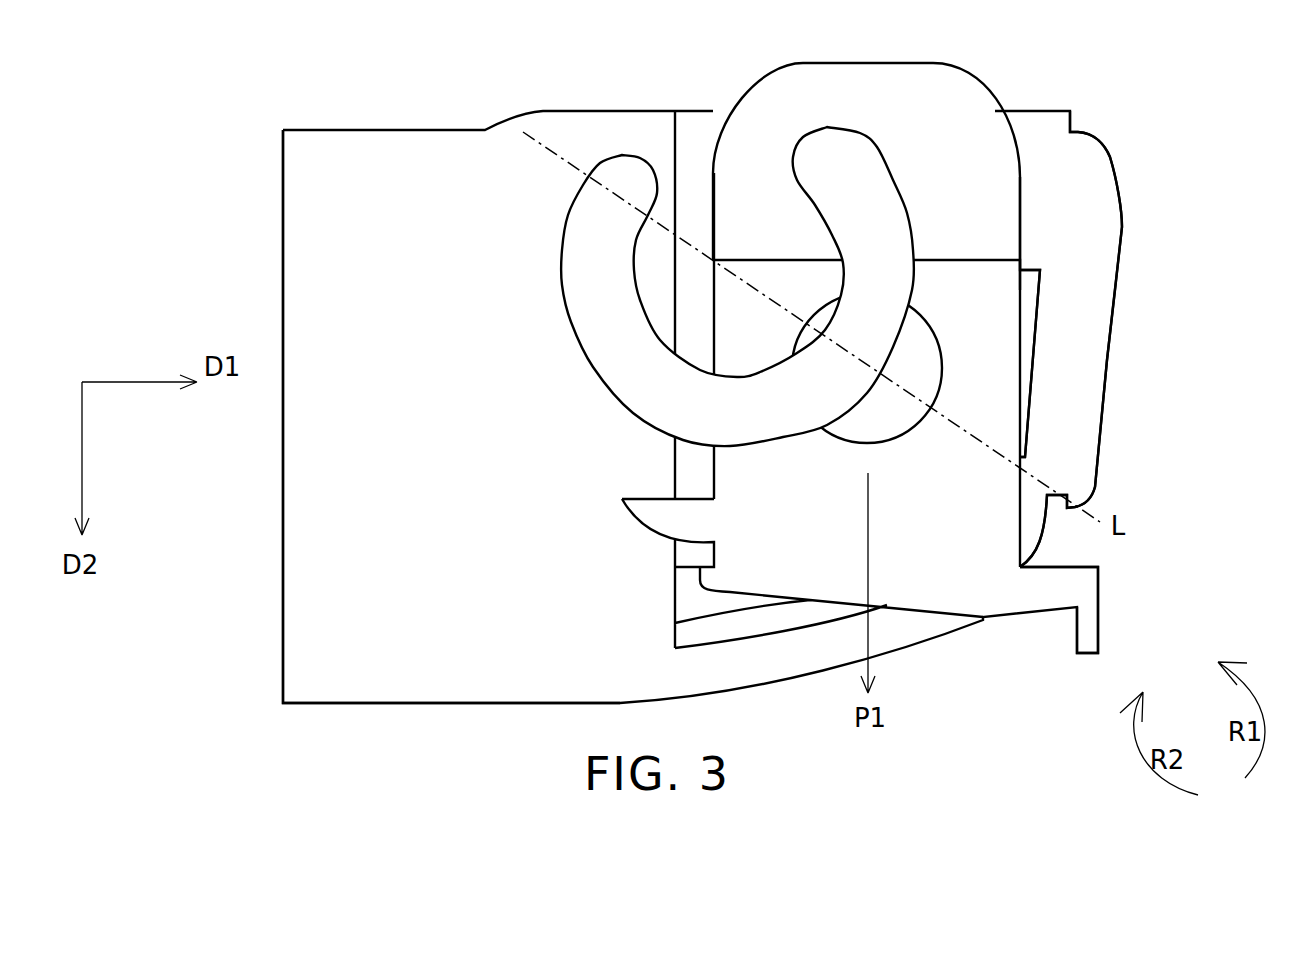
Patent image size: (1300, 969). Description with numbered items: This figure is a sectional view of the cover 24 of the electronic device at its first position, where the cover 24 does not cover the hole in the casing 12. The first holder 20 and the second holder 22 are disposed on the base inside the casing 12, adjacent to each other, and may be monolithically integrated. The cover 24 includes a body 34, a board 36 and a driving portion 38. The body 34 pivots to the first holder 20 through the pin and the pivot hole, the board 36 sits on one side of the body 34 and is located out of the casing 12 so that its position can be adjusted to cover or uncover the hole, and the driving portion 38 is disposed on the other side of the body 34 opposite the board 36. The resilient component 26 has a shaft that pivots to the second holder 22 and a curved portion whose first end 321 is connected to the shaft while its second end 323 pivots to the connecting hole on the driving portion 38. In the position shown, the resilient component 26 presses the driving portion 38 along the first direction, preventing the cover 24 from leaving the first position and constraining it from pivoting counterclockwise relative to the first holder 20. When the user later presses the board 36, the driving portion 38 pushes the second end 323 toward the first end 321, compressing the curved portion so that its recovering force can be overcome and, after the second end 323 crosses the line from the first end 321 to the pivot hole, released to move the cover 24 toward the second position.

The casing 12 is at (1043, 125).
The first holder 20 is at (703, 130).
The second holder 22 is at (448, 140).
The cover 24 is at (1141, 382).
The resilient component 26 is at (574, 364).
The first end 321 is at (620, 158).
The second end 323 is at (848, 143).
The body 34 is at (998, 330).
The board 36 is at (1117, 605).
The driving portion 38 is at (998, 226).